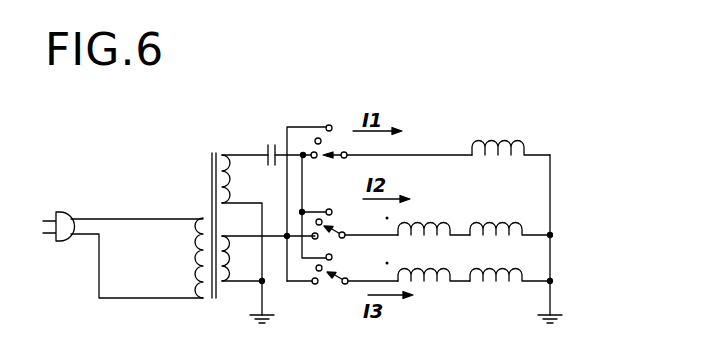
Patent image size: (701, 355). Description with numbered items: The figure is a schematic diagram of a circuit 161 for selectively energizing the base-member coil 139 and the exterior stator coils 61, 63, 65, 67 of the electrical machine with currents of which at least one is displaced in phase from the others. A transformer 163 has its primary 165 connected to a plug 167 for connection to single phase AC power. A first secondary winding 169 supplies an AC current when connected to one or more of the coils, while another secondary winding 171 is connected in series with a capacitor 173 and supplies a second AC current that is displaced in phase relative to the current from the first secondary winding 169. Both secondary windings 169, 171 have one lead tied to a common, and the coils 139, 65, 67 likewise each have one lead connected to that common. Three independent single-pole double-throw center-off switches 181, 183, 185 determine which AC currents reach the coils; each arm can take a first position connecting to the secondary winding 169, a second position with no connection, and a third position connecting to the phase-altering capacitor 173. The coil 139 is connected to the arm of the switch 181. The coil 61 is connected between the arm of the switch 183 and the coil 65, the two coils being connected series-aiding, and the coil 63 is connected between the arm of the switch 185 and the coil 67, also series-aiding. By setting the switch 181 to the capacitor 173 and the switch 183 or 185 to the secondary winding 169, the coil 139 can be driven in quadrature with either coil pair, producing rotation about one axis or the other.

The circuit 161 is at (147, 148).
The transformer 163 is at (215, 156).
The primary 165 is at (203, 219).
The plug 167 is at (71, 213).
The first secondary winding 169 is at (233, 284).
The secondary winding 171 is at (233, 154).
The capacitor 173 is at (278, 147).
The switch 181 is at (333, 141).
The switch 183 is at (343, 213).
The switch 185 is at (325, 285).
The circular concentrated coil 139 is at (502, 141).
The circular concentrated coil 61 is at (428, 222).
The circular concentrated coil 63 is at (438, 268).
The circular concentrated coil 65 is at (505, 222).
The circular concentrated coil 67 is at (483, 268).